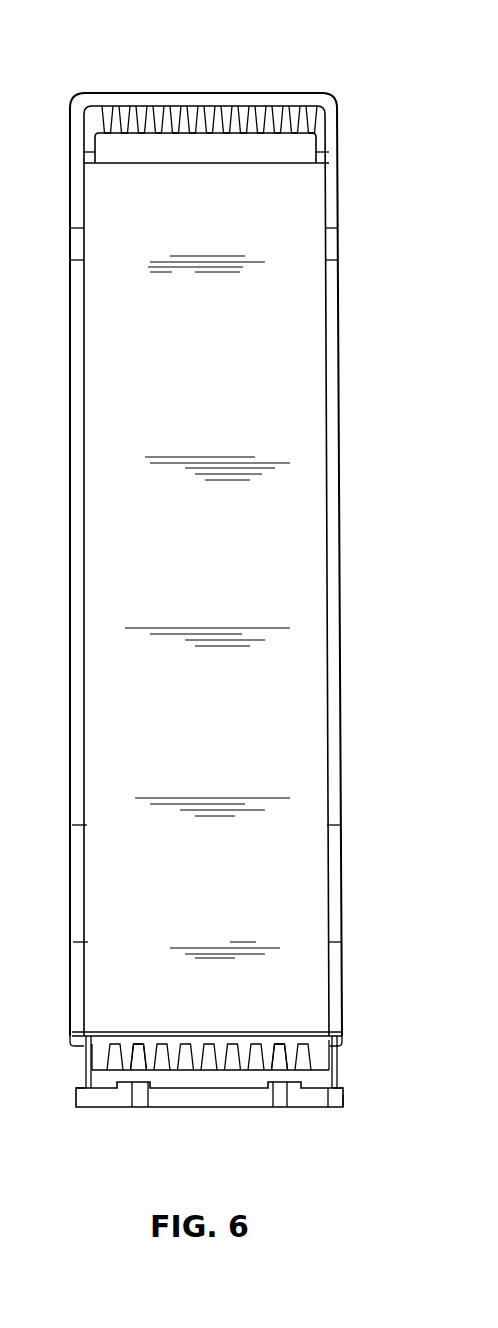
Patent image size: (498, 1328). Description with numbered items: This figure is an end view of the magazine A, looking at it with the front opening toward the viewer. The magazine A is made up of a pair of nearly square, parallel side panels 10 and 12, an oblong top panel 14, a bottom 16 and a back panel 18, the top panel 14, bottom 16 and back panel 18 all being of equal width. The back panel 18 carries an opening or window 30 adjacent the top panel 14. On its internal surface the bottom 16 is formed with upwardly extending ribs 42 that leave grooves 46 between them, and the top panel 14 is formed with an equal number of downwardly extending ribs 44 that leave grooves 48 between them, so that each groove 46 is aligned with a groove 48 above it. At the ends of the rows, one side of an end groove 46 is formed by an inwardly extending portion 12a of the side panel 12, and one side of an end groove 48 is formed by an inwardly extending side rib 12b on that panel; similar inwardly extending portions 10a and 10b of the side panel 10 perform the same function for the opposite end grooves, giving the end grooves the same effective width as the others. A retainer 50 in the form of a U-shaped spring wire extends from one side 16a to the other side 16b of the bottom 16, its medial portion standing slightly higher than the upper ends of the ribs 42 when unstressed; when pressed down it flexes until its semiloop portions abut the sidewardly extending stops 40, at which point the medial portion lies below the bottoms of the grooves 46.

The side panel 10 is at (70, 660).
The side panel 12 is at (342, 659).
The top panel 14 is at (127, 93).
The bottom 16 is at (195, 1110).
The back panel 18 is at (214, 369).
The window 30 is at (204, 125).
The stop 40 is at (344, 1104).
The rib 42 is at (136, 1046).
The rib 44 is at (157, 125).
The groove 46 is at (293, 1050).
The groove 48 is at (260, 125).
The retainer 50 is at (210, 1033).
The inwardly extending portion 10a is at (86, 1062).
The inwardly extending portion 10b is at (86, 160).
The inwardly extending portion 12a is at (337, 1060).
The inwardly extending side rib 12b is at (330, 160).
The side of magazine bottom 16a is at (84, 1086).
The side of magazine bottom 16b is at (340, 1086).
The magazine A is at (62, 375).